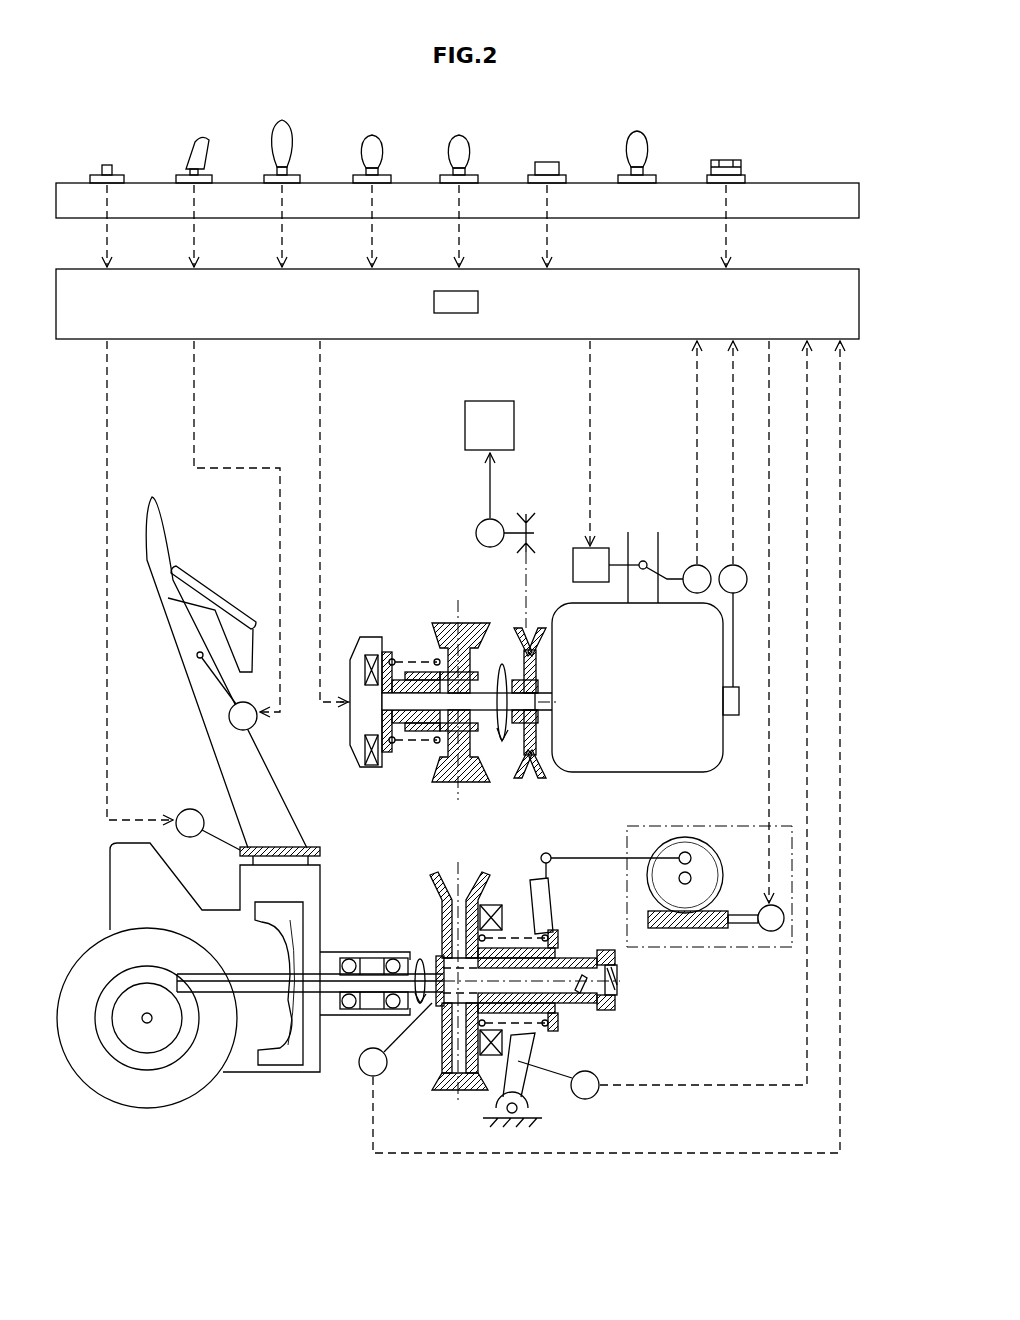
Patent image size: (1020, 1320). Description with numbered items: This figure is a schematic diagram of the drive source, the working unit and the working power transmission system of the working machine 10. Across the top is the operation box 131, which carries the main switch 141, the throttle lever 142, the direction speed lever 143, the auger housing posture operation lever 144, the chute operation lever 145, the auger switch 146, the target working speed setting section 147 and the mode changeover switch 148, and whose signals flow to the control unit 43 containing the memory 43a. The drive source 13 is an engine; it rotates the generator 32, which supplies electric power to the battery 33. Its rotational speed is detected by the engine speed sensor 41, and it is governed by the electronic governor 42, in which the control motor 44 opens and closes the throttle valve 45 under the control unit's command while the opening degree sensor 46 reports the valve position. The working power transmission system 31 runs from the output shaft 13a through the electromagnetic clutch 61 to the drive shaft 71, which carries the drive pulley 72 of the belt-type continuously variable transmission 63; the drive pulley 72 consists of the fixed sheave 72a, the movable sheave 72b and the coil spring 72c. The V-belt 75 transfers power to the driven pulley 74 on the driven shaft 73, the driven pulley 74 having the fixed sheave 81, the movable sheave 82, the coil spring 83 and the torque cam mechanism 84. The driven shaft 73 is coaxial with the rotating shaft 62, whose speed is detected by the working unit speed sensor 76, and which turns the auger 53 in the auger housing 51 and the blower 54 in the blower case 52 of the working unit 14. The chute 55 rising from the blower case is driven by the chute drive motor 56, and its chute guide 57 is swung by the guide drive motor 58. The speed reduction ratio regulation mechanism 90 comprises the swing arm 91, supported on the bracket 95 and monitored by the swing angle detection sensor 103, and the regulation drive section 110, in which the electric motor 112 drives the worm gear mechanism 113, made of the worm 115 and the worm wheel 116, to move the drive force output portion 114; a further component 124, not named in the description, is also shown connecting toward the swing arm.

The working machine 10 is at (783, 100).
The drive source 13 is at (700, 645).
The output shaft 13a is at (547, 692).
The working unit 14 is at (98, 840).
The working power transmission system 31 is at (390, 545).
The generator 32 is at (477, 526).
The battery 33 is at (462, 425).
The engine speed sensor 41 is at (744, 570).
The electronic governor 42 is at (729, 566).
The control unit 43 is at (806, 288).
The memory 43a is at (440, 290).
The control motor 44 is at (571, 558).
The throttle valve 45 is at (641, 560).
The opening degree sensor 46 is at (690, 566).
The auger housing 51 is at (120, 886).
The blower case 52 is at (240, 876).
The auger 53 is at (140, 1100).
The blower 54 is at (290, 1060).
The chute 55 is at (211, 672).
The chute drive motor 56 is at (188, 808).
The chute guide 57 is at (148, 570).
The guide drive motor 58 is at (228, 712).
The electromagnetic clutch 61 is at (358, 650).
The rotating shaft 62 is at (262, 990).
The belt-type continuously variable transmission 63 is at (470, 608).
The drive shaft 71 is at (398, 670).
The drive pulley 72 is at (438, 712).
The fixed sheave 72a is at (475, 772).
The movable sheave 72b is at (428, 772).
The coil spring 72c is at (407, 768).
The driven shaft 73 is at (568, 990).
The driven pulley 74 is at (498, 1048).
The V-belt 75 is at (452, 625).
The working unit speed sensor 76 is at (368, 1078).
The fixed sheave 81 is at (435, 1090).
The movable sheave 82 is at (487, 1092).
The coil spring 83 is at (520, 1033).
The torque cam mechanism 84 is at (541, 877).
The speed reduction ratio regulation mechanism 90 is at (541, 1115).
The swing arm 91 is at (552, 895).
The bracket 95 is at (520, 1122).
The swing angle detection sensor 103 is at (598, 1095).
The regulation drive section 110 is at (772, 824).
The electric motor 112 is at (775, 933).
The worm gear mechanism 113 is at (702, 973).
The drive force output portion 114 is at (700, 840).
The worm 115 is at (680, 930).
The worm wheel 116 is at (731, 956).
The cable 124 is at (590, 858).
The operation box 131 is at (810, 186).
The main switch 141 is at (107, 163).
The throttle lever 142 is at (194, 138).
The direction speed lever 143 is at (272, 140).
The auger housing posture operation lever 144 is at (363, 150).
The chute operation lever 145 is at (450, 150).
The auger switch 146 is at (537, 160).
The target working speed setting section 147 is at (625, 142).
The mode changeover switch 148 is at (718, 158).